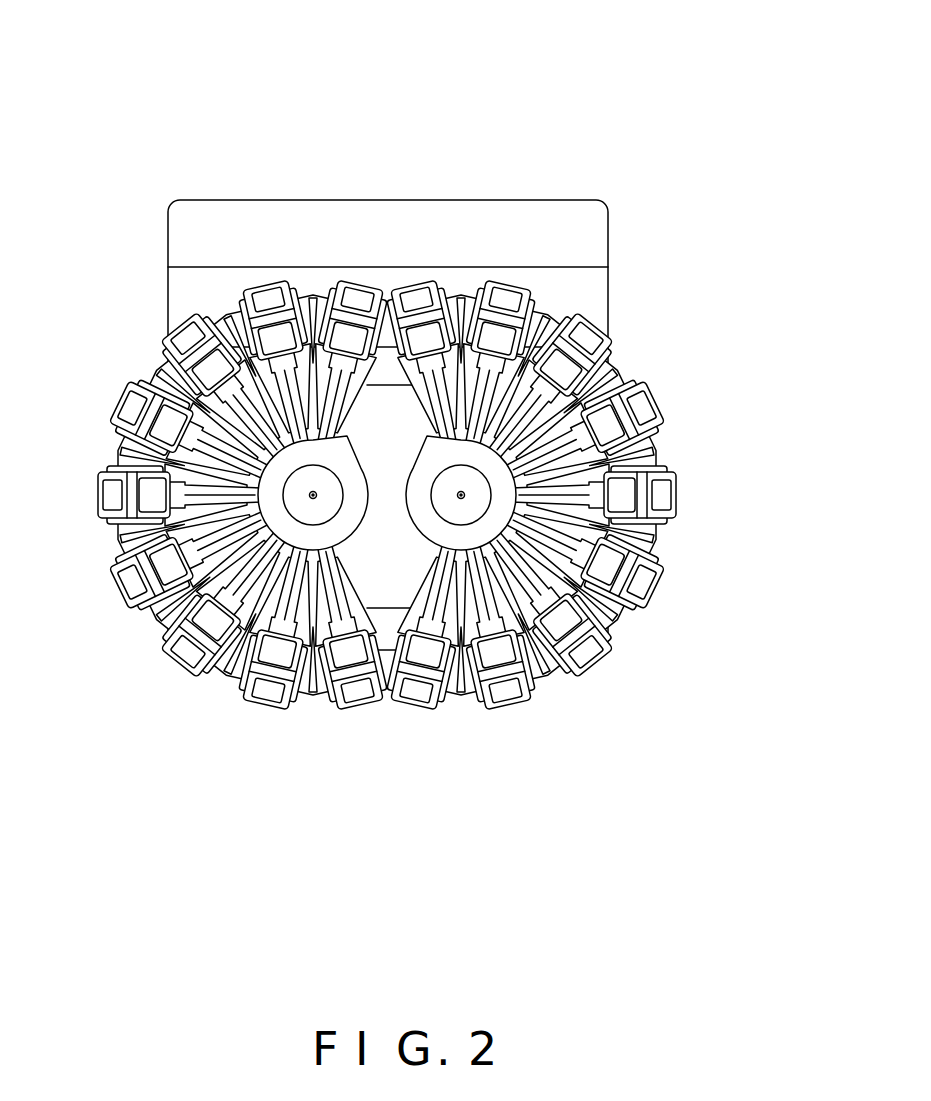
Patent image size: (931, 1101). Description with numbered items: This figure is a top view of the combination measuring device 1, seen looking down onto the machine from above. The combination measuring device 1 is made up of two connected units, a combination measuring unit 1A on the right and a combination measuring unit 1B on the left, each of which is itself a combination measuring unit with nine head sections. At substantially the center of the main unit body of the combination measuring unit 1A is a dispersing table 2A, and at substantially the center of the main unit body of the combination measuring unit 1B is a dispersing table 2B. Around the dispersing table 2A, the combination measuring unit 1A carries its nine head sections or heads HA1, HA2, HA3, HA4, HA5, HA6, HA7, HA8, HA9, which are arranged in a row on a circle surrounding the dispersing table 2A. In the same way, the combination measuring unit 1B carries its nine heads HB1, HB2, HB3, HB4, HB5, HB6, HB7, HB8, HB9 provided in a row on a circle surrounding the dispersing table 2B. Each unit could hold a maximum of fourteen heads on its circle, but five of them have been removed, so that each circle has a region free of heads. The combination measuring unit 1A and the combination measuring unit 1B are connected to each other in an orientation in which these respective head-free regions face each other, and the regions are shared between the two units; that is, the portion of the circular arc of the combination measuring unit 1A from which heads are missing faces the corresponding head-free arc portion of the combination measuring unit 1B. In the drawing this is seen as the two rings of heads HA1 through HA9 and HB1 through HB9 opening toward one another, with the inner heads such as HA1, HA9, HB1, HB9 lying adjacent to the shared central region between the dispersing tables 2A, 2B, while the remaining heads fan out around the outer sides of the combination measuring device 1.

The combination measuring device 1 is at (397, 145).
The combination measuring unit 1A is at (570, 728).
The combination measuring unit 1B is at (197, 728).
The dispersing table 2A is at (450, 515).
The dispersing table 2B is at (332, 468).
The head section HA1 is at (431, 640).
The head section HA2 is at (493, 640).
The head section HA3 is at (562, 608).
The head section HA4 is at (611, 552).
The head section HA5 is at (630, 495).
The head section HA6 is at (611, 437).
The head section HA7 is at (563, 387).
The head section HA8 is at (507, 295).
The head section HA9 is at (417, 295).
The head section HB1 is at (357, 295).
The head section HB2 is at (268, 295).
The head section HB3 is at (207, 387).
The head section HB4 is at (164, 437).
The head section HB5 is at (145, 495).
The head section HB6 is at (164, 552).
The head section HB7 is at (217, 608).
The head section HB8 is at (282, 640).
The head section HB9 is at (342, 643).